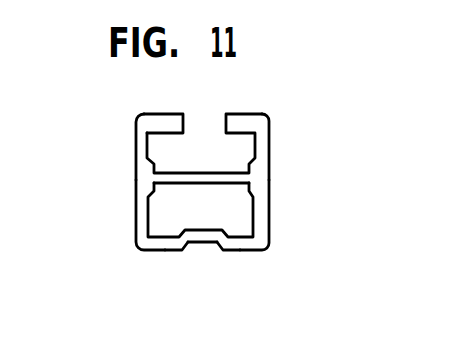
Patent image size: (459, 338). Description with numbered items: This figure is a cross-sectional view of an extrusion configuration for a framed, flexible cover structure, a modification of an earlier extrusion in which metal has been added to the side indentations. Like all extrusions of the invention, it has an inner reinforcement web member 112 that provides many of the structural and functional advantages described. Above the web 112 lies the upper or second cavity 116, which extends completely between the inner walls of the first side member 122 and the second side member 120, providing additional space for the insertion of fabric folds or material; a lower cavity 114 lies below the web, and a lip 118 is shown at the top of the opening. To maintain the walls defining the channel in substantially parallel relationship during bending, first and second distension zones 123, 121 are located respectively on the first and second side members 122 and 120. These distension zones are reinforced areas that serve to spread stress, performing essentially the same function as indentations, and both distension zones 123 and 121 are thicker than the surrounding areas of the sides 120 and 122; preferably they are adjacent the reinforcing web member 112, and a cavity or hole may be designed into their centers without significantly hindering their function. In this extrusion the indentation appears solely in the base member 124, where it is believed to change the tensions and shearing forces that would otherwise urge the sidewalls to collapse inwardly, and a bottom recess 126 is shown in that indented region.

The inner reinforcement web member 112 is at (228, 183).
The lower chamber 114 is at (182, 213).
The upper or second cavity 116 is at (202, 153).
The lip 118 is at (183, 124).
The second side member 120 is at (256, 227).
The second distension zone 121 is at (257, 173).
The first side member 122 is at (143, 225).
The first distension zone 123 is at (148, 175).
The base member 124 is at (250, 241).
The bottom recess 126 is at (198, 243).